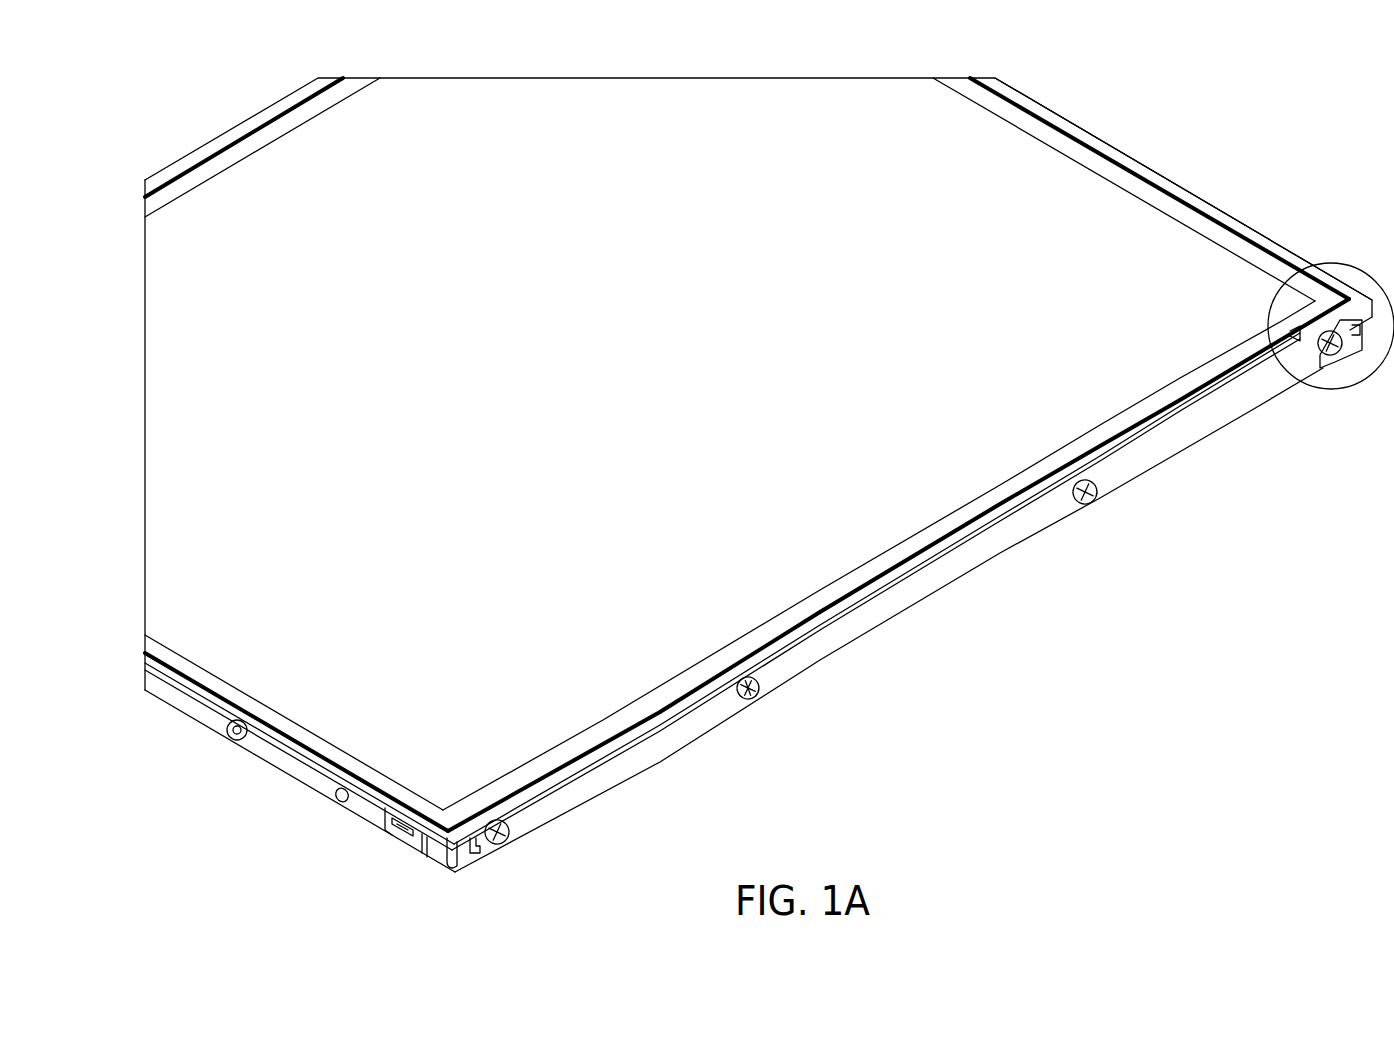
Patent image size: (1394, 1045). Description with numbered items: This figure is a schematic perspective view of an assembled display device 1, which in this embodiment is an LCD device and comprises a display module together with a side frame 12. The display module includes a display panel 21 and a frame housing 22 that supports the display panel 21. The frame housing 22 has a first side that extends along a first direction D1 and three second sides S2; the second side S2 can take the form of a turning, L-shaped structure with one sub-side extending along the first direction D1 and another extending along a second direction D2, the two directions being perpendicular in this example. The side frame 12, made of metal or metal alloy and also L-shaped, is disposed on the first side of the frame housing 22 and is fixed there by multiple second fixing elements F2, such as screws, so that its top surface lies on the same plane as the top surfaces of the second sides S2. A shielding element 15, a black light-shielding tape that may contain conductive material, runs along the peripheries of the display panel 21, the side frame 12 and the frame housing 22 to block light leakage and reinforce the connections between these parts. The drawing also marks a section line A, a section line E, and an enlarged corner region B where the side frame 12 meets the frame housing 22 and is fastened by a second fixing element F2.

The display device 1 is at (1280, 126).
The side frame 12 is at (1185, 447).
The shielding element 15 is at (1143, 185).
The display panel 21 is at (1025, 167).
The frame housing 22 is at (1273, 228).
The second side S2 is at (228, 138).
The second fixing element F2 is at (1092, 500).
The enlarged detail region B is at (1327, 392).
The section line A- A is at (903, 653).
The section line E- E is at (808, 720).
The first direction D1 is at (1030, 806).
The second direction D2 is at (1030, 806).